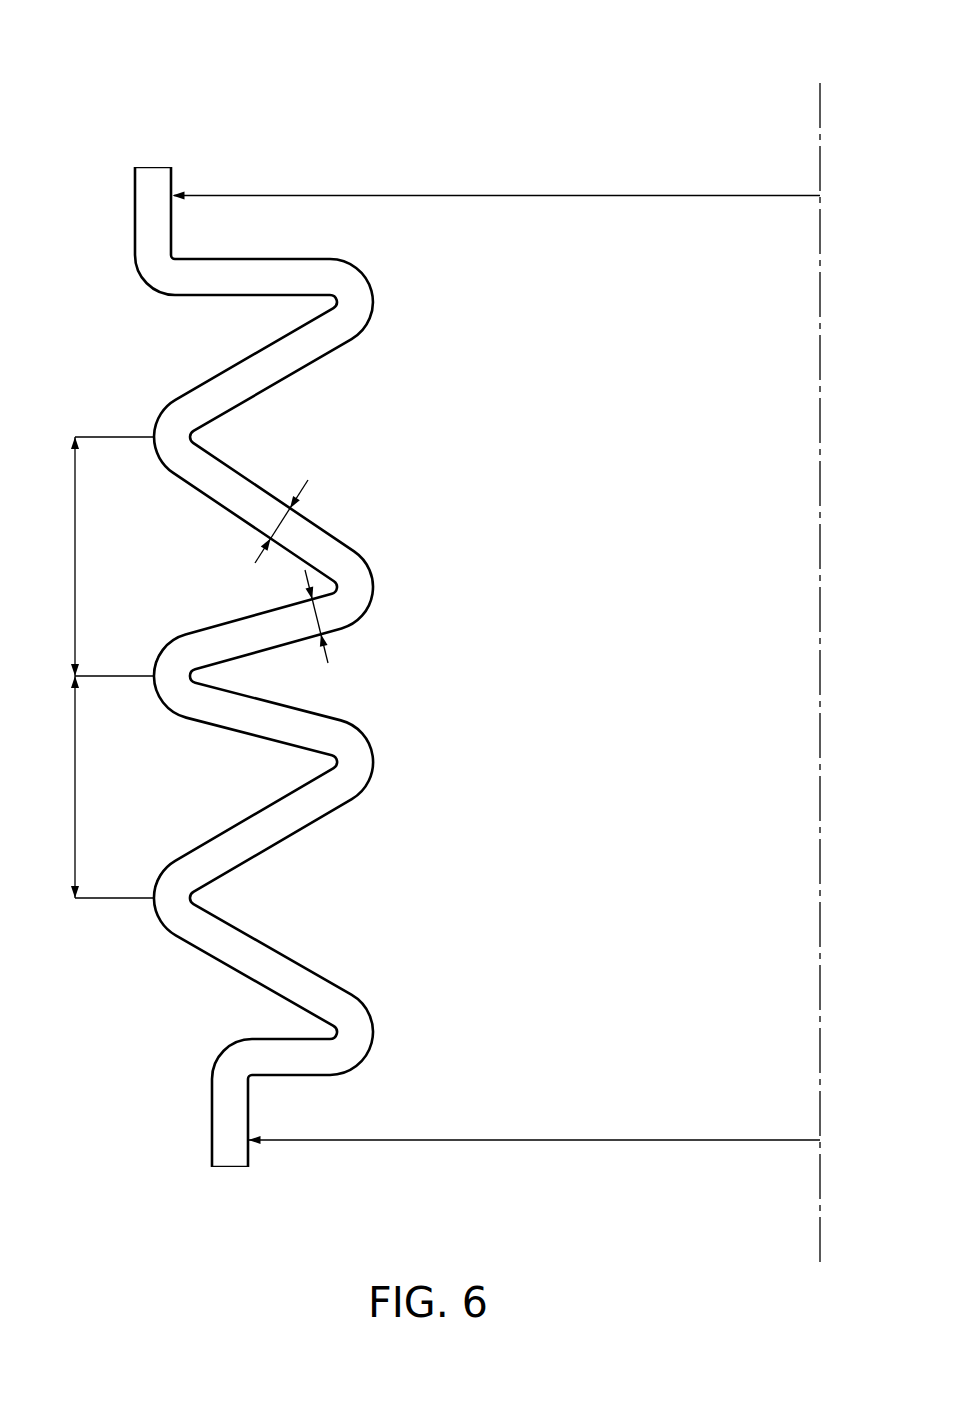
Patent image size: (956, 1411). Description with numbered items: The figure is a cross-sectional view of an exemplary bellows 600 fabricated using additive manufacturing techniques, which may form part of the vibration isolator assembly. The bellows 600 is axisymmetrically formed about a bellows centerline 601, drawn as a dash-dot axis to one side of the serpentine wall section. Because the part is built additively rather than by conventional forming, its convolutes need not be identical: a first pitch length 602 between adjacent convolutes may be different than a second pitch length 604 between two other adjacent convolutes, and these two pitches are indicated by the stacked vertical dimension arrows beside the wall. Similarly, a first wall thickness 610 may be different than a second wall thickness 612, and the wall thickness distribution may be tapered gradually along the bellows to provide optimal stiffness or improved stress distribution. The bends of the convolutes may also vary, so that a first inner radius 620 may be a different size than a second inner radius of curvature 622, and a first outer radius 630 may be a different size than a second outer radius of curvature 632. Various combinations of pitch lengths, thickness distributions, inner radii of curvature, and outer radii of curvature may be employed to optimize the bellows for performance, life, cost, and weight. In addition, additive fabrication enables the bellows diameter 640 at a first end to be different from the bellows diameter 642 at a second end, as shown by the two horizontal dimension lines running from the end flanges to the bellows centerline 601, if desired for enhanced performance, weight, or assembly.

The bellows 600 is at (609, 90).
The bellows centerline 601 is at (819, 133).
The first pitch length 602 is at (100, 787).
The second pitch length 604 is at (100, 556).
The first wall thickness 610 is at (324, 613).
The second wall thickness 612 is at (288, 522).
The first inner radius 620 is at (208, 896).
The second inner radius of curvature 622 is at (206, 673).
The first outer radius 630 is at (150, 870).
The second outer radius of curvature 632 is at (150, 648).
The bellows diameter at a first end 640 is at (537, 1141).
The bellows diameter at a second end 642 is at (515, 197).